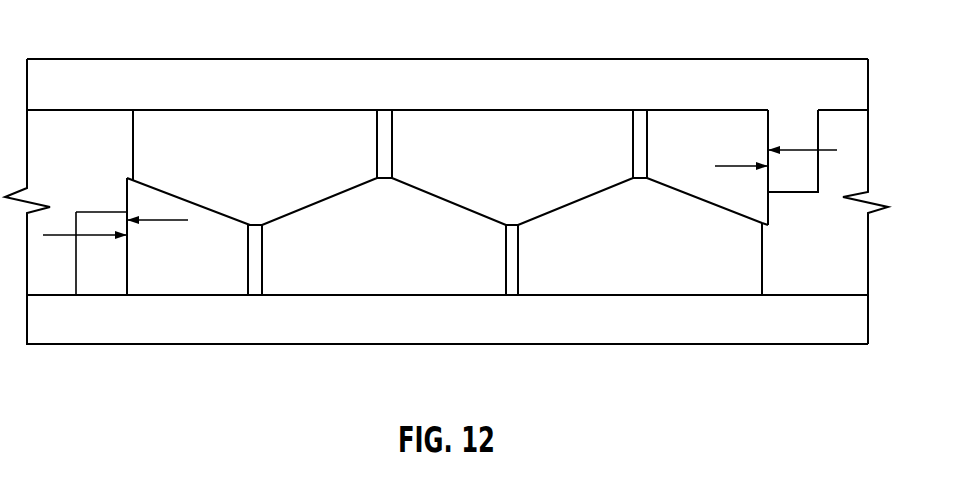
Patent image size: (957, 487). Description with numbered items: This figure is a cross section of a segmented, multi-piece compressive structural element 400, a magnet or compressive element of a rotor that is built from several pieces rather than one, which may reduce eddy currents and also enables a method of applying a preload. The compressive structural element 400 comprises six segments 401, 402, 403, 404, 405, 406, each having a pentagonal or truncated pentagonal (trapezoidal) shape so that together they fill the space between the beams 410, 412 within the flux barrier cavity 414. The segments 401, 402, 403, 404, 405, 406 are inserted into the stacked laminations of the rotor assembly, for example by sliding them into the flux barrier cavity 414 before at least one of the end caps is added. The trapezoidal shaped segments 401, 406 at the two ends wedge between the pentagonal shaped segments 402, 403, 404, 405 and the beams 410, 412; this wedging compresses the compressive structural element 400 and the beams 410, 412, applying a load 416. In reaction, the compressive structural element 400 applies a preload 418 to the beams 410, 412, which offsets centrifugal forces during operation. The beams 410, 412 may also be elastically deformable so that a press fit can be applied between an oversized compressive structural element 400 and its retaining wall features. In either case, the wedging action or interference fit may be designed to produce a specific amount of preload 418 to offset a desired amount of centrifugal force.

The compressive structural element 400 is at (207, 298).
The trapezoidal shaped segment 401 is at (193, 265).
The pentagonal shaped segment 402 is at (277, 180).
The pentagonal shaped segment 403 is at (413, 263).
The pentagonal shaped segment 404 is at (533, 180).
The pentagonal shaped segment 405 is at (670, 263).
The trapezoidal shaped segment 406 is at (742, 156).
The beam 410 is at (93, 272).
The beam 412 is at (788, 128).
The flux barrier cavity 414 is at (82, 140).
The load 416 is at (52, 236).
The preload 418 is at (162, 218).